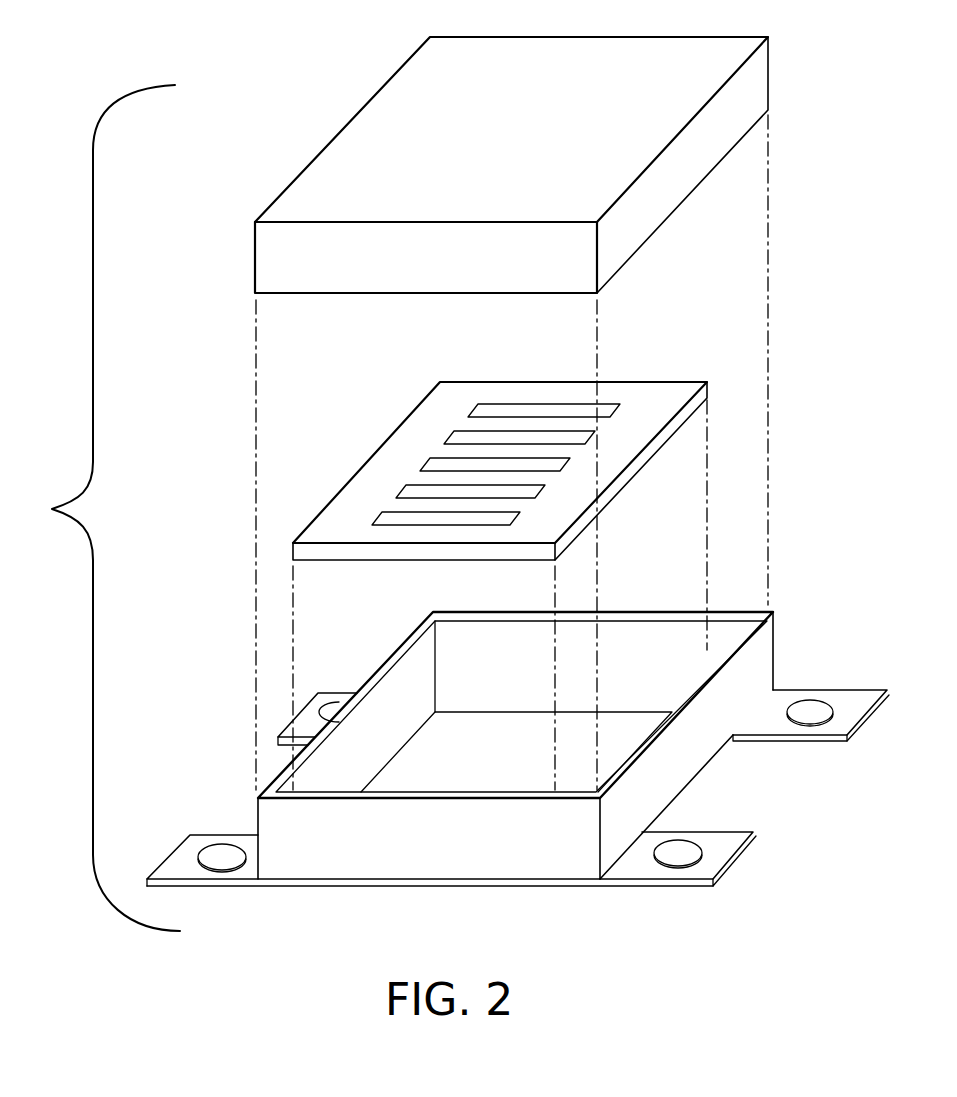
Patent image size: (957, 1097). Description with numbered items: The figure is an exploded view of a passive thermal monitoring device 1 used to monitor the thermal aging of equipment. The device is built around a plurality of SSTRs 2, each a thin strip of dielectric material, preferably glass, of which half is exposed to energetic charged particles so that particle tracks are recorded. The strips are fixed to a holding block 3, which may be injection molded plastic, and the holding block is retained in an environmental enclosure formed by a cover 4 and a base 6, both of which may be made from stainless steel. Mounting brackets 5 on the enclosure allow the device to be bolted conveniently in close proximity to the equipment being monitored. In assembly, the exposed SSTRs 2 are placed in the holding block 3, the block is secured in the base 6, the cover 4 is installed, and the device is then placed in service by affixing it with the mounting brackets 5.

The passive thermal monitoring device 1 is at (35, 522).
The SSTRs 2 is at (520, 514).
The holding block 3 is at (293, 546).
The cover 4 is at (774, 70).
The mounting brackets 5 is at (823, 741).
The base 6 is at (775, 658).